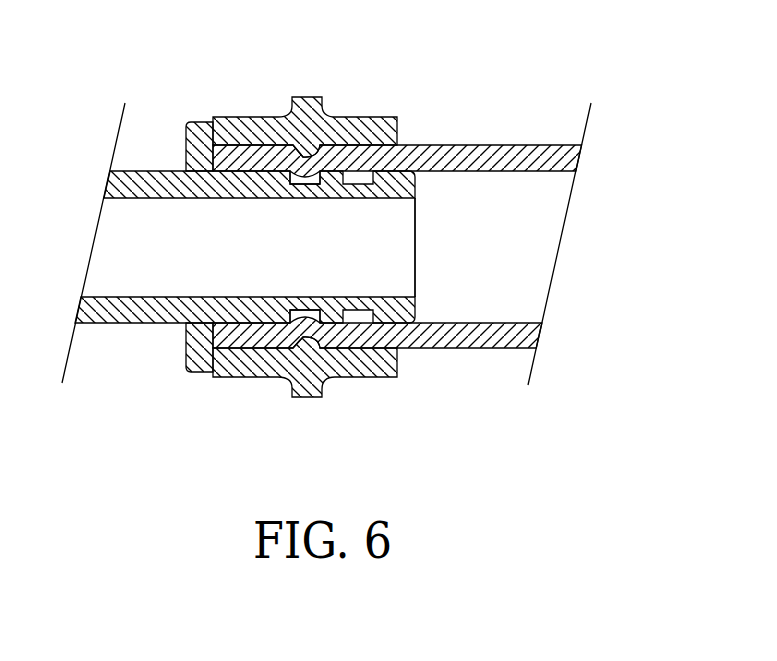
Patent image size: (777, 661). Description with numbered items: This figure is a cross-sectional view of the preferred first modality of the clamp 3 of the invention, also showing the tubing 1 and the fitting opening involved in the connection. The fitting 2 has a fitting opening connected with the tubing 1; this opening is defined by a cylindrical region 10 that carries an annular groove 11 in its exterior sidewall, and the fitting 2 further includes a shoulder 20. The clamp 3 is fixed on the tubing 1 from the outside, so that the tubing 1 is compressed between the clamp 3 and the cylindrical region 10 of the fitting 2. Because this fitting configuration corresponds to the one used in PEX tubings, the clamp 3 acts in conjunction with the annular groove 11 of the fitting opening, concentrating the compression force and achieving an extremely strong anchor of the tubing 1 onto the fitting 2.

The tubing 1 is at (448, 322).
The fitting 2 is at (422, 245).
The clamp 3 is at (390, 380).
The cylindrical region 10 is at (207, 198).
The annular groove 11 is at (302, 185).
The shoulder 20 is at (200, 121).